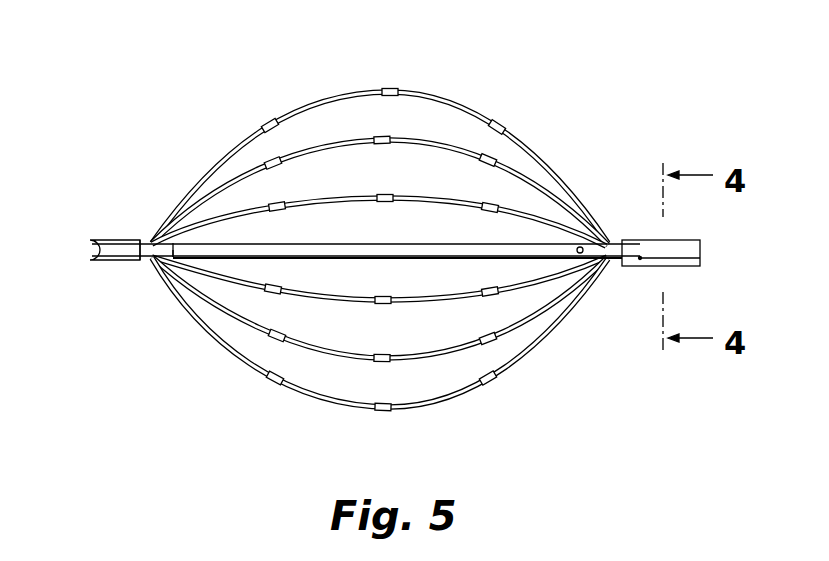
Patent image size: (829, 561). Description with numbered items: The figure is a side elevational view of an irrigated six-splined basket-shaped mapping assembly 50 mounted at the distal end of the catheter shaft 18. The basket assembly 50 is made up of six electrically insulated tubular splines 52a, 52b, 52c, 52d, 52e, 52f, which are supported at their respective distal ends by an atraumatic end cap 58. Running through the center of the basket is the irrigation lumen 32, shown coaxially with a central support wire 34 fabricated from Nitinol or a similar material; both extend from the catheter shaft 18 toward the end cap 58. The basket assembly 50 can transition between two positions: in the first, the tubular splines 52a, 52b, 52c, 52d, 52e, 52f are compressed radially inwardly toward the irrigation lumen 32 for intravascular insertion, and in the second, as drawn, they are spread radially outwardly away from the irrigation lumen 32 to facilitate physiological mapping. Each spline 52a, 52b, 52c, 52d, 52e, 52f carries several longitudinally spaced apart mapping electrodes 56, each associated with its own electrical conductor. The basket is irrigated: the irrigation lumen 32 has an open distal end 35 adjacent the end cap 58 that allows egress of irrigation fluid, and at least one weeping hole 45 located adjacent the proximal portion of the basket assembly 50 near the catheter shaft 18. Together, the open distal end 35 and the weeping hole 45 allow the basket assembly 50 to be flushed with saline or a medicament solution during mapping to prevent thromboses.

The catheter shaft 18 is at (680, 254).
The irrigation lumen 32 is at (375, 243).
The central support wire 34 is at (166, 243).
The open distal end 35 is at (170, 260).
The weeping hole 45 is at (584, 247).
The six-splined basket-shaped mapping assembly 50 is at (164, 146).
The tubular spline 52a is at (413, 92).
The tubular spline 52b is at (462, 151).
The tubular spline 52c is at (535, 216).
The tubular spline 52d is at (543, 282).
The tubular spline 52e is at (467, 348).
The tubular spline 52f is at (428, 404).
The mapping electrode 56 is at (271, 118).
The atraumatic end cap 58 is at (104, 253).